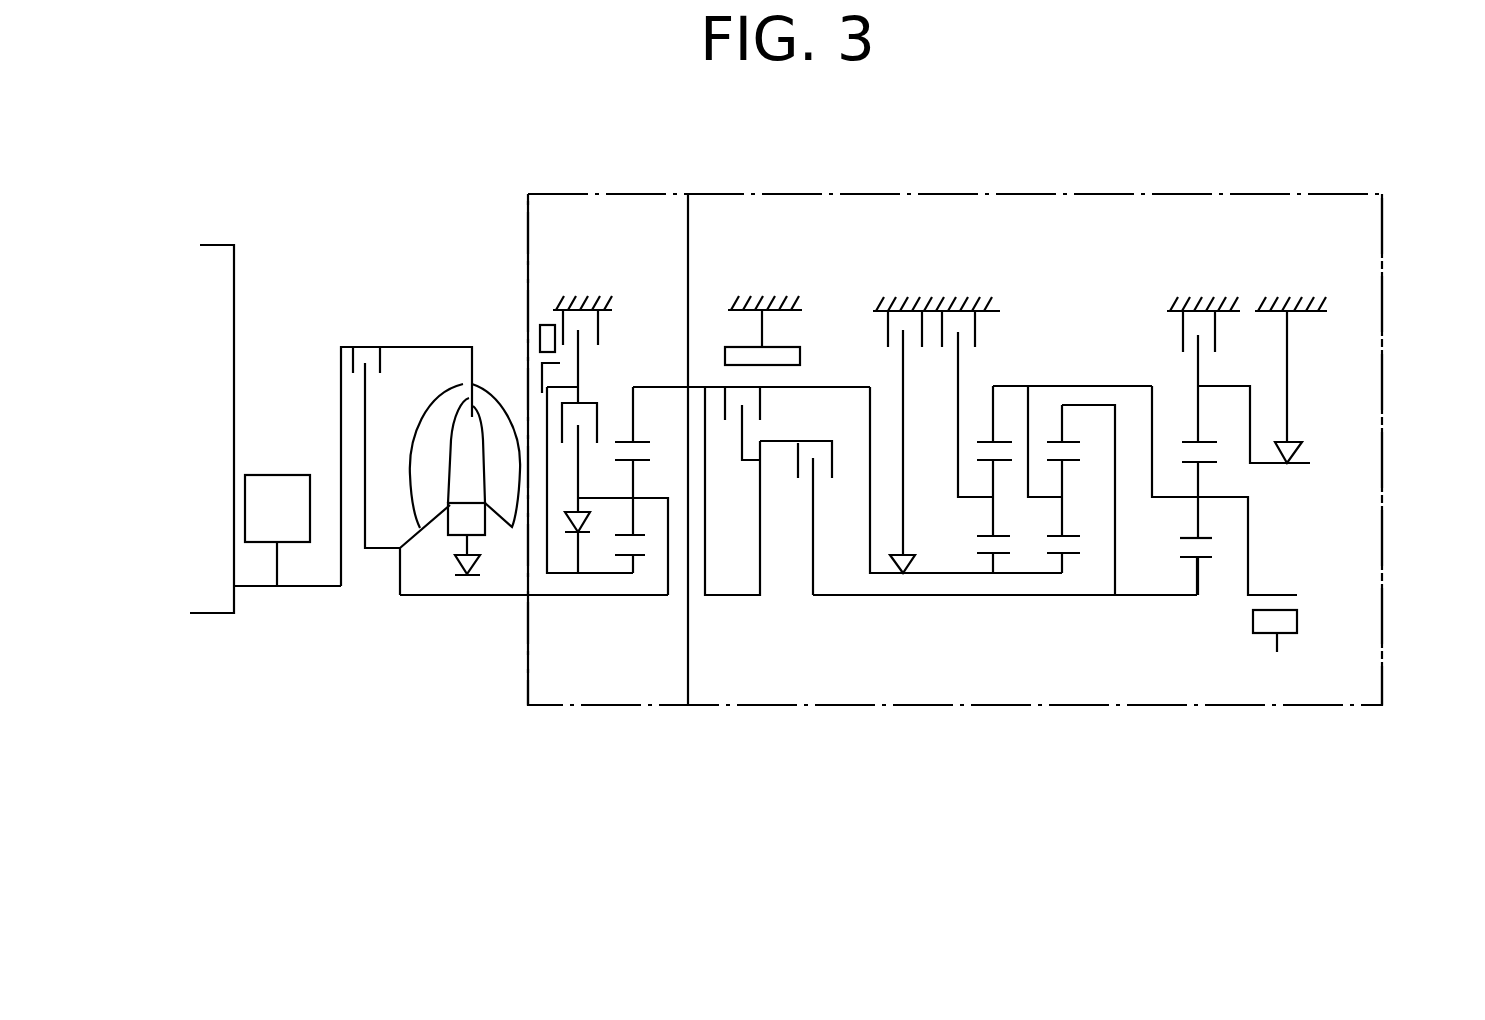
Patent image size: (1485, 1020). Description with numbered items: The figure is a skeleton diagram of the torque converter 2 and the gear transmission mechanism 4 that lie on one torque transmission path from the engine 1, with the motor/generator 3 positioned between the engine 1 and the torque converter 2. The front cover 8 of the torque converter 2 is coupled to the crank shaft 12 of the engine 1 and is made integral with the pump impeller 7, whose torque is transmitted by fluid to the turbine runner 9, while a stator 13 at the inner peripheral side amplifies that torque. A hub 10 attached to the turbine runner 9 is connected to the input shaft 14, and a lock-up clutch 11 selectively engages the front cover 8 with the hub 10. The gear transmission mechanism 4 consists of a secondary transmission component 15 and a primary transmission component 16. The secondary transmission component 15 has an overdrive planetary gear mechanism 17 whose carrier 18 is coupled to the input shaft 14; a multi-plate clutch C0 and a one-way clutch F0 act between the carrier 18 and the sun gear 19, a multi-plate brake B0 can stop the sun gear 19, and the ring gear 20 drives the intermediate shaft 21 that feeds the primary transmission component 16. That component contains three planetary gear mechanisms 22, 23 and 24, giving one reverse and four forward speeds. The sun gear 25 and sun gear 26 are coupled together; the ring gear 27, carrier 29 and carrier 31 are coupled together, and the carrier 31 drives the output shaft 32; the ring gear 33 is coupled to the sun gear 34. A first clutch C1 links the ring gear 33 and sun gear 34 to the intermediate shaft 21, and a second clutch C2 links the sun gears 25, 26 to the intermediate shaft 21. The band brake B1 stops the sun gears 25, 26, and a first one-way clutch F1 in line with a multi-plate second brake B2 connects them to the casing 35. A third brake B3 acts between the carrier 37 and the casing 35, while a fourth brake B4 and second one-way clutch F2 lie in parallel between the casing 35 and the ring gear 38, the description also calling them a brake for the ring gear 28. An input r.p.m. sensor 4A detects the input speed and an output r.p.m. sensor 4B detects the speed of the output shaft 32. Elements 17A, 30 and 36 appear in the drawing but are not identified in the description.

The engine 1 is at (238, 280).
The torque converter 2 is at (431, 333).
The motor/generator 3 is at (285, 490).
The gear transmission mechanism 4 is at (940, 190).
The input r.p.m. sensor 4A is at (540, 340).
The output r.p.m. sensor 4B is at (1285, 640).
The pump impeller 7 is at (487, 402).
The front cover 8 is at (340, 365).
The turbine runner 9 is at (428, 433).
The hub 10 is at (377, 552).
The lock-up clutch 11 is at (381, 364).
The crank shaft 12 is at (252, 588).
The stator 13 is at (474, 523).
The input shaft 14 is at (478, 597).
The secondary transmission component 15 is at (648, 710).
The primary transmission component 16 is at (925, 710).
The planetary gear mechanism 17 is at (650, 582).
The sun gear 17A is at (618, 461).
The carrier 18 is at (662, 490).
The sun gear 19 is at (618, 557).
The ring gear 20 is at (647, 443).
The intermediate shaft 21 is at (738, 596).
The first planetary gear mechanism 22 is at (992, 582).
The second planetary gear mechanism 23 is at (1064, 582).
The third planetary gear mechanism 24 is at (1206, 584).
The sun gear 25 is at (990, 541).
The sun gear 26 is at (1070, 558).
The ring gear 27 is at (982, 442).
The ring gear 28 is at (1064, 537).
The carrier 29 is at (1040, 498).
The ring gear 30 is at (1180, 538).
The carrier 31 is at (1162, 498).
The output shaft 32 is at (1283, 595).
The ring gear 33 is at (1075, 428).
The sun gear 34 is at (1210, 558).
The casing 35 is at (1293, 294).
The carrier 36 is at (1010, 462).
The carrier 37 is at (973, 500).
The ring gear 38 is at (1198, 367).
The multi-plate brake B0 is at (632, 306).
The first brake B1 is at (814, 350).
The second brake B2 is at (882, 330).
The third brake B3 is at (997, 325).
The fourth brake B4 is at (1168, 330).
The multi-plate clutch C0 is at (604, 414).
The first clutch C1 is at (805, 472).
The second clutch C2 is at (731, 426).
The one-way clutch F0 is at (553, 534).
The first one-way clutch F1 is at (882, 575).
The second one-way clutch F2 is at (1307, 449).